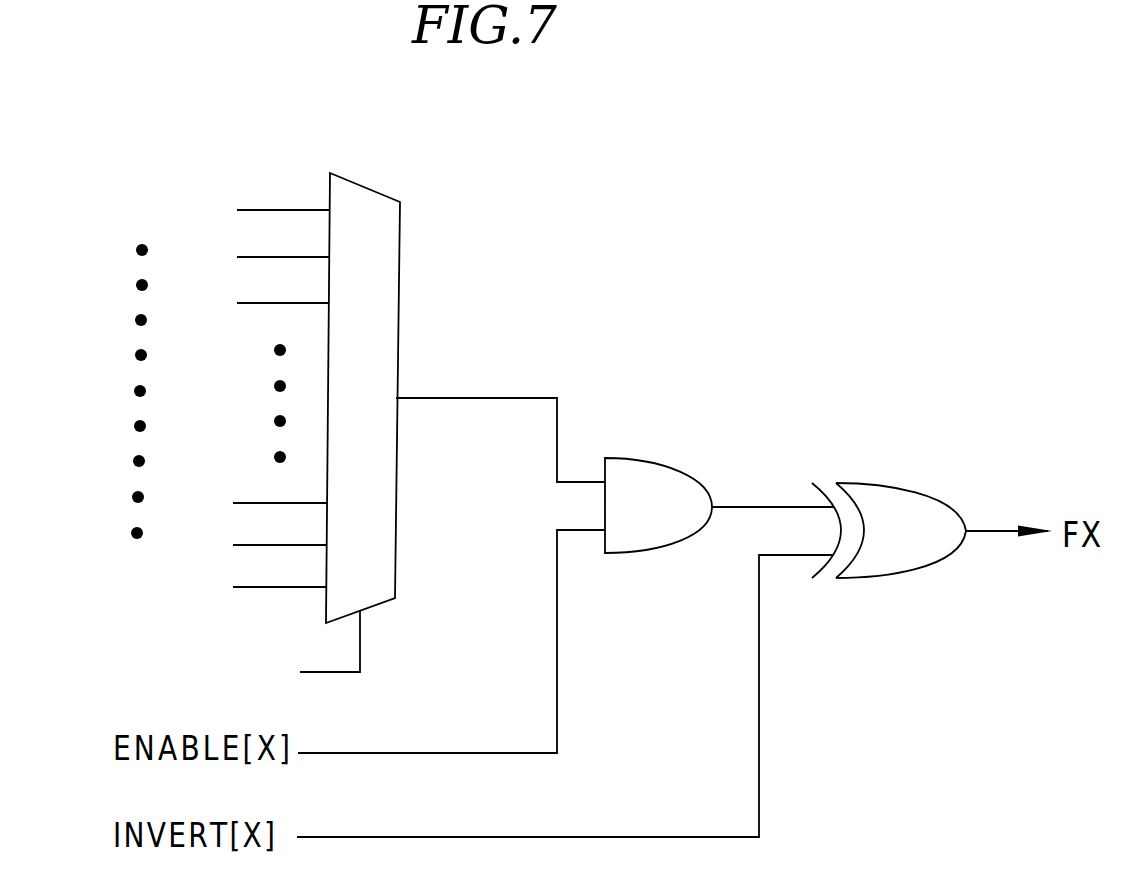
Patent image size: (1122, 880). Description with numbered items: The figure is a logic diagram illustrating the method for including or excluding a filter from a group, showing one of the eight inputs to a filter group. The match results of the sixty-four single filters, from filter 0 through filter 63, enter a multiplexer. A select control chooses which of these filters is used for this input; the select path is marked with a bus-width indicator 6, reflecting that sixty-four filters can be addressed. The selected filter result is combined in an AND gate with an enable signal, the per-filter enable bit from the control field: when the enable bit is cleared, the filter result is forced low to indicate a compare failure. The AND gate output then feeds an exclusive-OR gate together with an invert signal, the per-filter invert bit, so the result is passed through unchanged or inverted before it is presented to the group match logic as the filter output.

The filter 0 is at (203, 211).
The filter 63 is at (187, 587).
The select bus width (6 bits) 6 is at (346, 643).